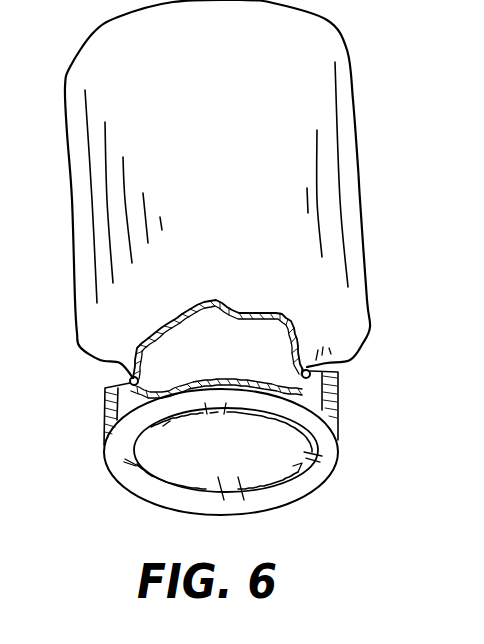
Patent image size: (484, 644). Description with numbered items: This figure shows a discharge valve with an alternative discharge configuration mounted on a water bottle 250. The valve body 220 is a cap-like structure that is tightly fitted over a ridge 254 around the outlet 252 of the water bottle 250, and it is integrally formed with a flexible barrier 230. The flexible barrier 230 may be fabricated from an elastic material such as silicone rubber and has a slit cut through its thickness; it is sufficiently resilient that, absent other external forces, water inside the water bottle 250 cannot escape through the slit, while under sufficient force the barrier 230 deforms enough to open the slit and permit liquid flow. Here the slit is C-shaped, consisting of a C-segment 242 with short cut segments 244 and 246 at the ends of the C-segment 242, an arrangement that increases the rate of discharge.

The water bottle 250 is at (360, 193).
The outlet 252 is at (150, 387).
The ridge 254 is at (332, 338).
The valve body 220 is at (335, 410).
The flexible barrier 230 is at (267, 465).
The C-segment 242 is at (163, 425).
The short cut segment 246 is at (211, 413).
The short cut segment 244 is at (125, 450).